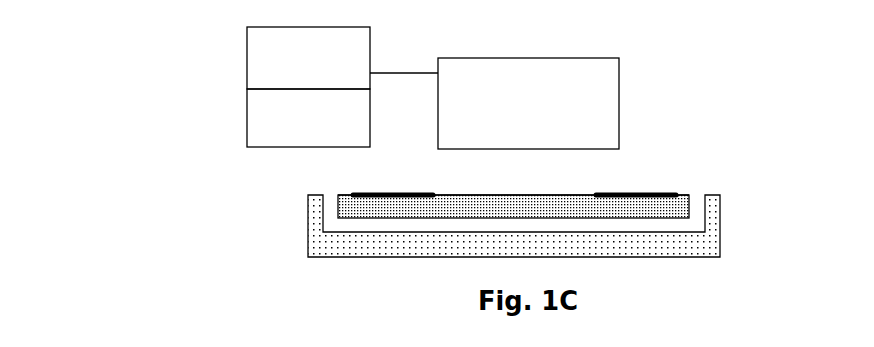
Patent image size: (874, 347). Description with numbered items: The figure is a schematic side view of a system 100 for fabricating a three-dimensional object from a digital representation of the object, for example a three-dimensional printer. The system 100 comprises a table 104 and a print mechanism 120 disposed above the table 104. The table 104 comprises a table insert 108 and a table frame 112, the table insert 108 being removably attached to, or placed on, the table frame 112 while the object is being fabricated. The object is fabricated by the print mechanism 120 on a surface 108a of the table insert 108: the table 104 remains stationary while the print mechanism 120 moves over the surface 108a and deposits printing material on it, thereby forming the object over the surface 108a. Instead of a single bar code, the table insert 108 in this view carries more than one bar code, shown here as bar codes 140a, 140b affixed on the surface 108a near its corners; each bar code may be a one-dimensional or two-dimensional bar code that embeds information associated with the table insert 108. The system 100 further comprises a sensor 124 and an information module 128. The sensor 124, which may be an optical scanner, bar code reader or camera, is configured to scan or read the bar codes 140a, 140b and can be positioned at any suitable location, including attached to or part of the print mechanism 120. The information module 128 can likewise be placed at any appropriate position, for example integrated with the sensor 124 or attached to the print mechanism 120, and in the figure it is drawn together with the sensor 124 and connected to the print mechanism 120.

The system 100 is at (704, 101).
The table 104 is at (417, 225).
The table insert 108 is at (340, 203).
The surface 108a is at (567, 194).
The table frame 112 is at (308, 241).
The print mechanism 120 is at (528, 103).
The sensor 124 is at (308, 118).
The information module 128 is at (308, 58).
The bar code 140a is at (383, 197).
The bar code 140b is at (657, 193).